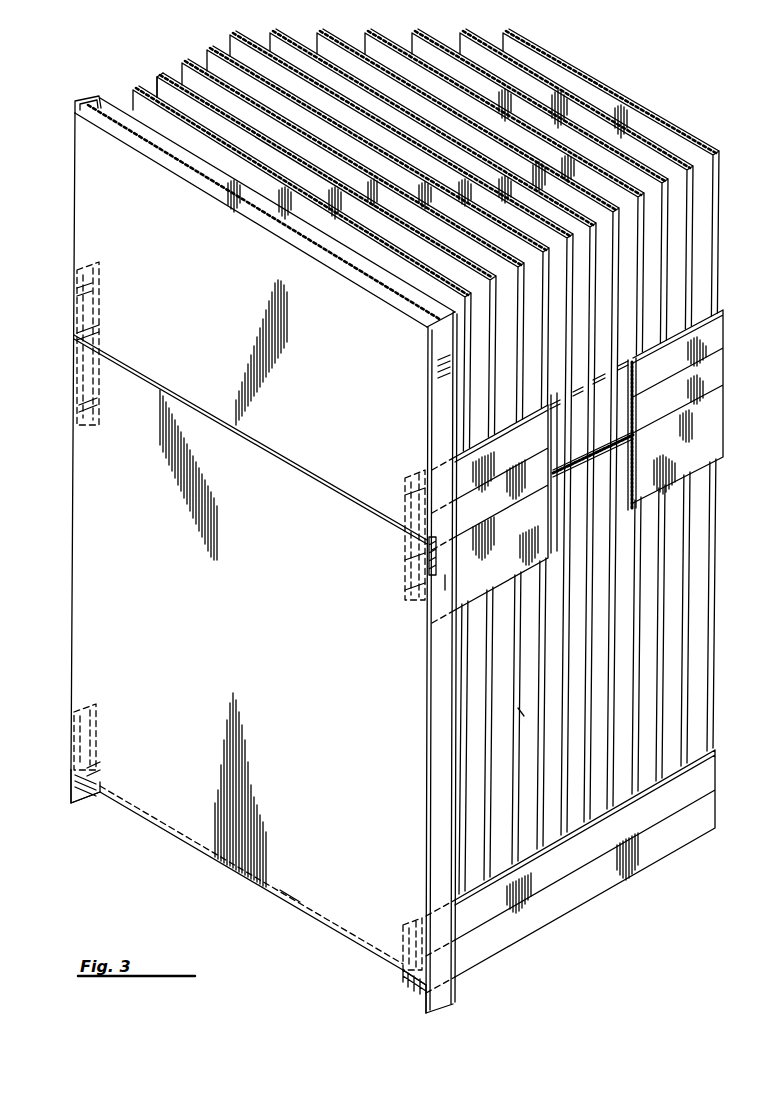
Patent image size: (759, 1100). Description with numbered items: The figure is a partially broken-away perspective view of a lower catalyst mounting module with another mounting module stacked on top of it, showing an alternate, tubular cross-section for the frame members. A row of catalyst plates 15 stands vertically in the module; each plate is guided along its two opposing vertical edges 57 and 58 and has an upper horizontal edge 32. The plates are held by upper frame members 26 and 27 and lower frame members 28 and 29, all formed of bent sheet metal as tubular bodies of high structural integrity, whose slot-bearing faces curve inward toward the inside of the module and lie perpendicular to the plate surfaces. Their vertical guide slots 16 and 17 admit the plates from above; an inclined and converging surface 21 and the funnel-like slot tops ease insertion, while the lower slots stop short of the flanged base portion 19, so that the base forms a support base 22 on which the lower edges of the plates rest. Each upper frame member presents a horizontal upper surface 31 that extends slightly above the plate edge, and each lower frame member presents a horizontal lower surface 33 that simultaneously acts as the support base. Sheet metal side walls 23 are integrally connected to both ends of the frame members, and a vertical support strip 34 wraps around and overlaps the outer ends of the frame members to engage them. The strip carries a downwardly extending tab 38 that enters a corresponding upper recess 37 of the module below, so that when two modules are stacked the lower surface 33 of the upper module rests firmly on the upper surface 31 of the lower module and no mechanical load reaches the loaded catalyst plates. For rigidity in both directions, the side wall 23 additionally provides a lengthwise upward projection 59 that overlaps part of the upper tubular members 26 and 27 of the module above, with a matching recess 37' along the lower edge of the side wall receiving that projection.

The catalyst plates 15 is at (620, 112).
The guide slots 16 is at (578, 528).
The guide slots 17 is at (634, 372).
The base portion 19 is at (405, 560).
The inclined and converging surface 21 is at (100, 300).
The support base 22 is at (632, 416).
The side walls 23 is at (100, 218).
The upper frame member 26 is at (86, 425).
The upper frame member 27 is at (392, 606).
The lower frame member 28 is at (70, 288).
The lower frame member 29 is at (400, 495).
The horizontal upper surface 31 is at (99, 337).
The upper horizontal edge 32 is at (625, 448).
The horizontal lower surface 33 is at (85, 800).
The vertical support strip 34 is at (92, 103).
The upper recess 37 is at (440, 609).
The recess 37' is at (270, 925).
The tab 38 is at (450, 550).
The vertical edge 57 is at (157, 75).
The vertical edge 58 is at (520, 712).
The upward projection 59 is at (277, 478).